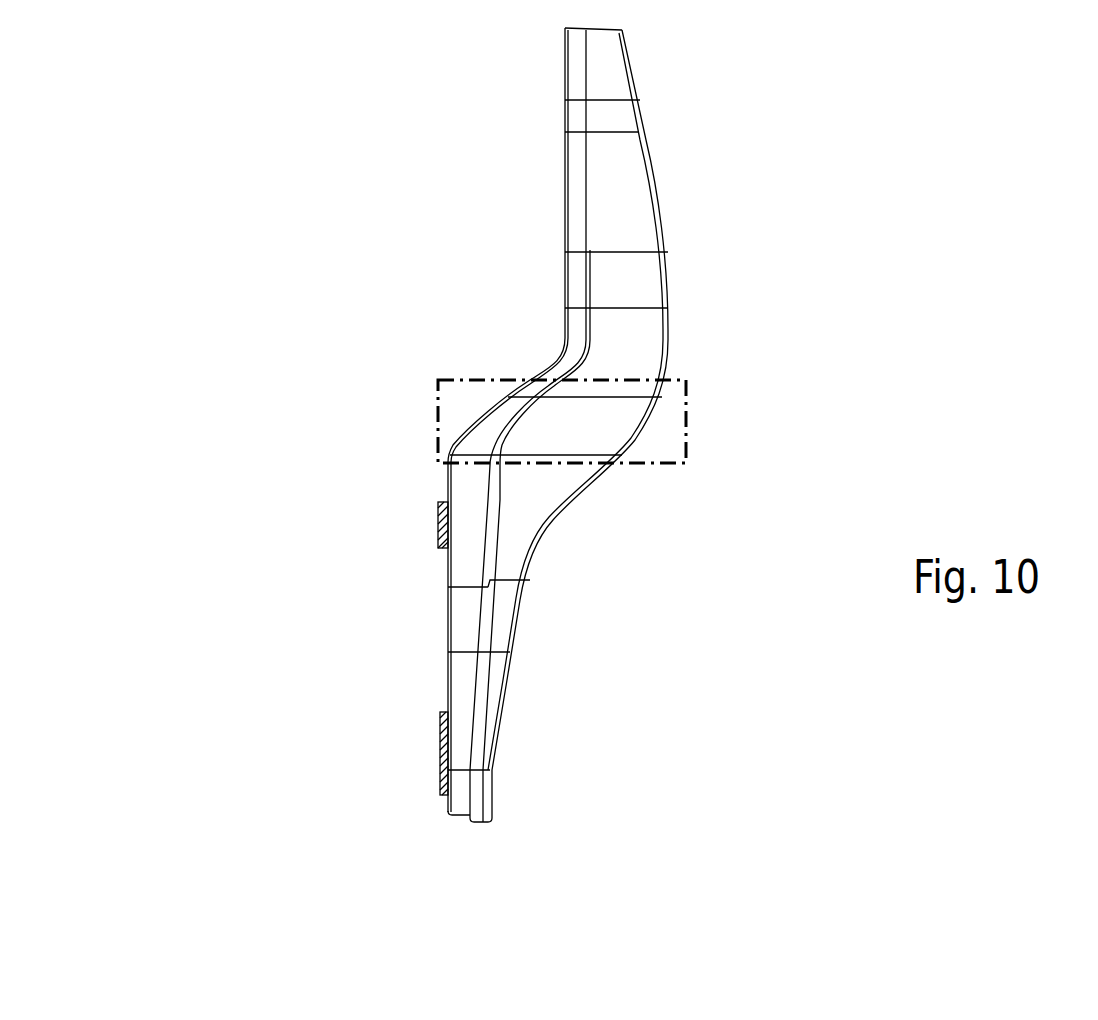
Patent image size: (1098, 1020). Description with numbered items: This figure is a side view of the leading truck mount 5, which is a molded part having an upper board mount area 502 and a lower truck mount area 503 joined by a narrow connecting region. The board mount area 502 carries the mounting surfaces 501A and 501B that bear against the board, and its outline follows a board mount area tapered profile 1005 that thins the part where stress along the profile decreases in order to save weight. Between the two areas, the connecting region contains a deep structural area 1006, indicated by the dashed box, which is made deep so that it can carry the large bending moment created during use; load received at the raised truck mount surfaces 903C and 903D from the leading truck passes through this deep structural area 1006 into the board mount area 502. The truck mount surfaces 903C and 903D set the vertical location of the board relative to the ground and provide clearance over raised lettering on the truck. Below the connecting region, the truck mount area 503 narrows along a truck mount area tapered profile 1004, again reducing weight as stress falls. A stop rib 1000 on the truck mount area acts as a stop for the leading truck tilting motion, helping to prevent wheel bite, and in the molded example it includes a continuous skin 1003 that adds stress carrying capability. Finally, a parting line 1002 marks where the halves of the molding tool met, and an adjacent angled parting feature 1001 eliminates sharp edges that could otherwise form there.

The leading truck mount 5 is at (884, 379).
The mounting surface 501A is at (552, 153).
The mounting surface 501B is at (459, 421).
The board mount area 502 is at (463, 225).
The truck mount area 503 is at (258, 559).
The truck mount surface 903C is at (429, 519).
The truck mount surface 903D is at (430, 743).
The stop rib 1000 is at (566, 534).
The parting feature 1001 is at (454, 803).
The parting line 1002 is at (503, 626).
The continuous skin 1003 is at (598, 504).
The truck mount area tapered profile 1004 is at (521, 692).
The board mount area tapered profile 1005 is at (666, 177).
The deep structural area 1006 is at (699, 433).